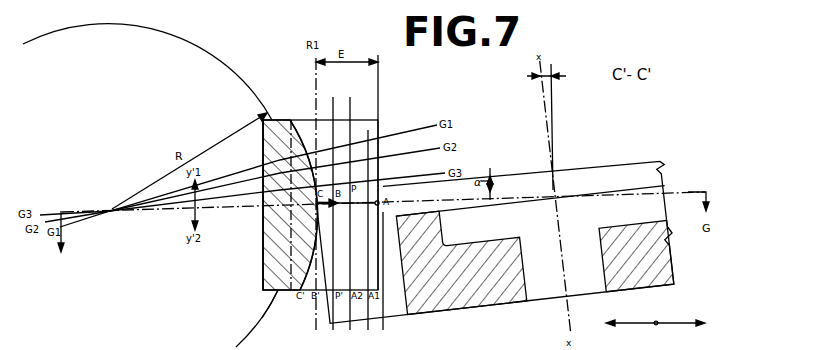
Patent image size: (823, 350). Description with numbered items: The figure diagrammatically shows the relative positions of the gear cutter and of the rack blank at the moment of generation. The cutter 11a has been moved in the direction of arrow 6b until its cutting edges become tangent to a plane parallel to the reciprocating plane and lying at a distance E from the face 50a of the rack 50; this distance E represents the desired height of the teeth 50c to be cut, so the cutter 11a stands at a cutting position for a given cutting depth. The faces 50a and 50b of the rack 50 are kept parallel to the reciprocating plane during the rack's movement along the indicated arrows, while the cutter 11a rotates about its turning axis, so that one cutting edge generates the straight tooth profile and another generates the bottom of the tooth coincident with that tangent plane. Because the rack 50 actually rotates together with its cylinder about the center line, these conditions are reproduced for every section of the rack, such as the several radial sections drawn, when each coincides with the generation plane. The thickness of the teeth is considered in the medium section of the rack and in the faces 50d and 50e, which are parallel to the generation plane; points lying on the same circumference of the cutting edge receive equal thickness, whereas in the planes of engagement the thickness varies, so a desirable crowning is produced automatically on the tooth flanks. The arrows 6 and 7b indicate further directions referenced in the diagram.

The incident light direction 6 is at (60, 238).
The arrow 6b is at (631, 333).
The direction toward lens side 7b is at (679, 333).
The cutter 11a is at (471, 303).
The rack 50 is at (267, 281).
The face of rack 50a is at (378, 136).
The face of rack 50b is at (263, 152).
The teeth of the rack 50c is at (378, 123).
The face of rack 50d is at (283, 300).
The face of rack 50e is at (289, 120).